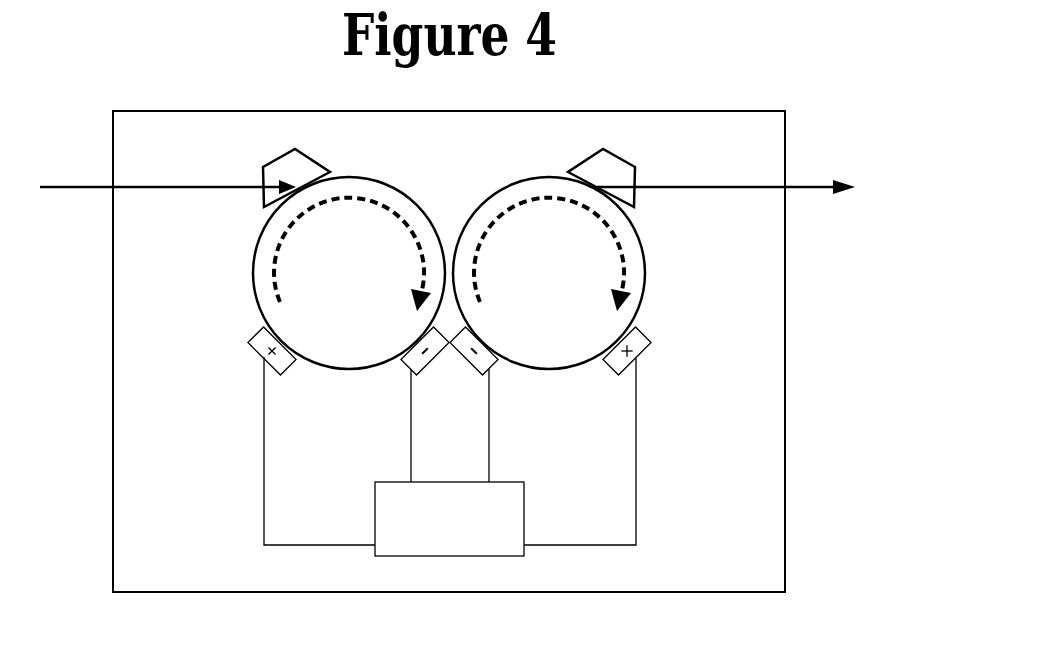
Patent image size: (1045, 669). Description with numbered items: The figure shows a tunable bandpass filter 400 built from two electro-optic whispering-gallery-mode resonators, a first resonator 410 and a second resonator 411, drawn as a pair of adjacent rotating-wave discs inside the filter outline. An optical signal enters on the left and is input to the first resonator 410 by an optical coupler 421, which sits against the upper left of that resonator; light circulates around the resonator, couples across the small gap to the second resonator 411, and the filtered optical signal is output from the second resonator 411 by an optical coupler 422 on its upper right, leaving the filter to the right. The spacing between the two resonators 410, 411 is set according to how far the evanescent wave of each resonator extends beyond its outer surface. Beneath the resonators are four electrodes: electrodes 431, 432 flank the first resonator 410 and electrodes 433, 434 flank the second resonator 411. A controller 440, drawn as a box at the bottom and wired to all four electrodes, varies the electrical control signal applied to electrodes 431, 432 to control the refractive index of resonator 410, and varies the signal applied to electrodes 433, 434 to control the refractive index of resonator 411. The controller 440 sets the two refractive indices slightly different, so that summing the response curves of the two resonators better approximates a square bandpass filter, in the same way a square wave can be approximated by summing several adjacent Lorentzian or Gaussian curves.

The bandpass filter 400 is at (515, 327).
The electro-optic WGM resonator 410 is at (283, 273).
The electro-optic WGM resonator 411 is at (616, 273).
The optical coupler 421 is at (219, 134).
The optical coupler 422 is at (680, 134).
The electrode 431 is at (248, 415).
The electrode 432 is at (366, 404).
The electrode 433 is at (534, 404).
The electrode 434 is at (652, 416).
The controller 440 is at (430, 531).